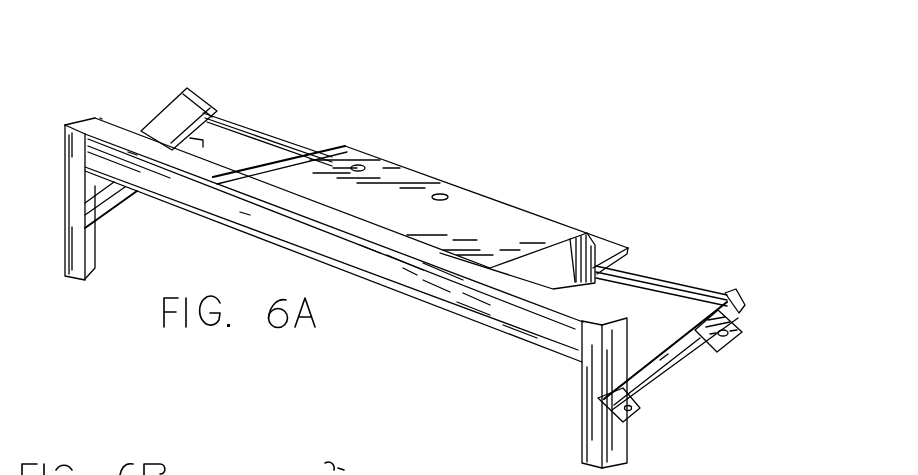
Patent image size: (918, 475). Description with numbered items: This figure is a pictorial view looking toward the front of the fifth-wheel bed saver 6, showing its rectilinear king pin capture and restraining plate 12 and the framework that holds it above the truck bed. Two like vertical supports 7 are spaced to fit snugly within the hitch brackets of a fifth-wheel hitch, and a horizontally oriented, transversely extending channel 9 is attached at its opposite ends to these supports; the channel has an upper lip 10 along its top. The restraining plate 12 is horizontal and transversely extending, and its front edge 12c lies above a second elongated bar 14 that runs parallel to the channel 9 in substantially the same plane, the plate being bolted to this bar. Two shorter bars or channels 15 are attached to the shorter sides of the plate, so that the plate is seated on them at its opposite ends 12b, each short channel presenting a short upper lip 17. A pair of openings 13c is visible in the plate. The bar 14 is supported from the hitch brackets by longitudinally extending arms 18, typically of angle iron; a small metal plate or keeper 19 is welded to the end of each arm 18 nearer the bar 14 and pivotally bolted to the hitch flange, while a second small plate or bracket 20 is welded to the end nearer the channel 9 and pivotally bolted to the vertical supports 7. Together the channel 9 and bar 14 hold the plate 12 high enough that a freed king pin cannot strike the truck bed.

The bed saver 6 is at (518, 80).
The vertical supports 7 is at (77, 242).
The channel 9 is at (102, 106).
The upper lip 10 is at (112, 126).
The king pin capture and restraining plate 12 is at (478, 204).
The opposite ends of the plate 12b is at (348, 148).
The front edge of the plate 12c is at (533, 212).
The holes 13c is at (445, 195).
The elongated bar 14 is at (665, 282).
The shorter bars or channels 15 is at (246, 138).
The short upper lip 17 is at (300, 150).
The longitudinally extending arms 18 is at (117, 200).
The keeper 19 is at (730, 350).
The bracket 20 is at (640, 410).